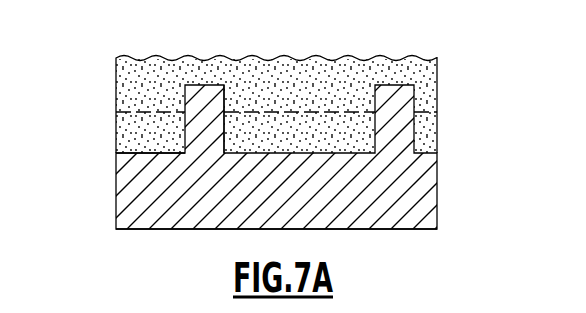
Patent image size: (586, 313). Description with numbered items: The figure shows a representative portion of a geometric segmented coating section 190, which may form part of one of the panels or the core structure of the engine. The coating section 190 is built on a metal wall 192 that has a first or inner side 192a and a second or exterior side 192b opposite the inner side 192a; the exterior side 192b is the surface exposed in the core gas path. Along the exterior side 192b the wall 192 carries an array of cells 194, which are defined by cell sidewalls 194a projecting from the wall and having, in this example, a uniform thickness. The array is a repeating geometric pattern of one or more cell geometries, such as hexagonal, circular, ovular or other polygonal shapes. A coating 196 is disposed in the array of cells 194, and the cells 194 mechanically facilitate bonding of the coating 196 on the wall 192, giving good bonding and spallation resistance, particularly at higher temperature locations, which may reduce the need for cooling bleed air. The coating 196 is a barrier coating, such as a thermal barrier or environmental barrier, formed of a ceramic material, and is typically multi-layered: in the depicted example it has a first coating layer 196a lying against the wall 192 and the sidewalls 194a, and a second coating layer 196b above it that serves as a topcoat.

The geometric segmented coating section 190 is at (289, 149).
The metal wall 192 is at (177, 247).
The inner side 192a is at (364, 229).
The exterior side 192b is at (131, 148).
The cells 194 is at (289, 95).
The cell sidewalls 194a is at (225, 97).
The coating 196 is at (153, 70).
The first coating layer 196a is at (428, 136).
The second coating layer 196b is at (428, 88).